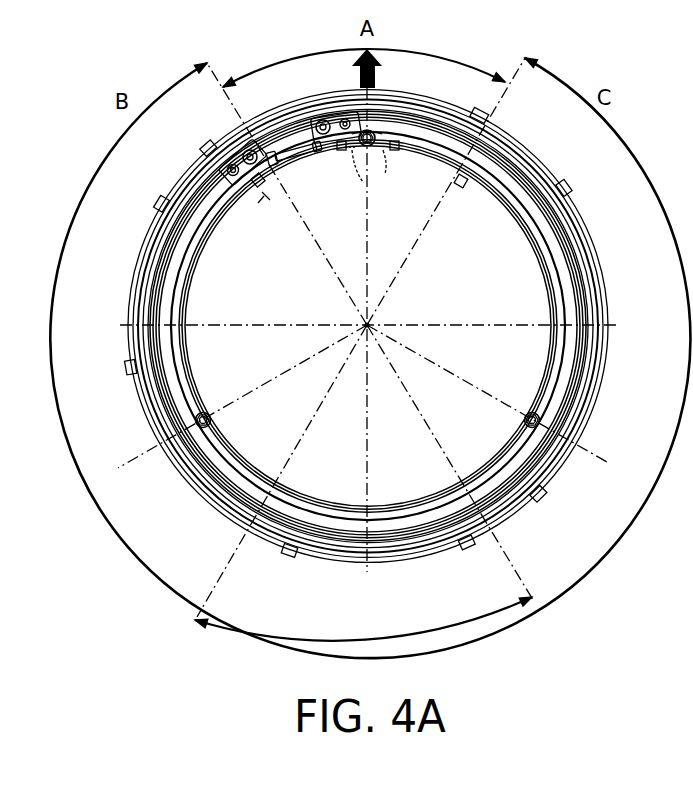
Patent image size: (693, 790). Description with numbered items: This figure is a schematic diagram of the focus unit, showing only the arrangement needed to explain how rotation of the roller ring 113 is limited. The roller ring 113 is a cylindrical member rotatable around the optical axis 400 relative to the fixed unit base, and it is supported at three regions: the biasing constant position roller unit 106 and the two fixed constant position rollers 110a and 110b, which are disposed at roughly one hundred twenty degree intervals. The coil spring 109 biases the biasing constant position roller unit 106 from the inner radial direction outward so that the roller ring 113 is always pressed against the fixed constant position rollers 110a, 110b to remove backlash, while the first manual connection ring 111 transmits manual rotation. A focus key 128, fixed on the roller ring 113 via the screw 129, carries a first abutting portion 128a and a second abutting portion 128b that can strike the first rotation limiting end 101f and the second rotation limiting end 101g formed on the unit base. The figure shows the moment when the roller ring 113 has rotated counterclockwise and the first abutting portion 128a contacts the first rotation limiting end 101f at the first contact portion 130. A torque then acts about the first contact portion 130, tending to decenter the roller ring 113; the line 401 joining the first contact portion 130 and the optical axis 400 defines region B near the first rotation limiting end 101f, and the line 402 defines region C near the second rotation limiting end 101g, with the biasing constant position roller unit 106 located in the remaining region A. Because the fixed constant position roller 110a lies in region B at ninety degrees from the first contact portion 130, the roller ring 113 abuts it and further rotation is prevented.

The biasing constant position roller unit 106 is at (363, 129).
The coil spring 109 is at (374, 160).
The fixed constant position roller 110a is at (199, 432).
The fixed constant position roller 110b is at (541, 422).
The first manual connection ring 111 is at (184, 183).
The roller ring 113 is at (156, 220).
The focus key 128 is at (290, 128).
The first abutting portion 128a is at (288, 162).
The second abutting portion 128b is at (341, 152).
The screw 129 is at (237, 138).
The first contact portion 130 is at (306, 200).
The first rotation limiting end 101f is at (250, 184).
The second rotation limiting end 101g is at (462, 186).
The optical axis 400 is at (362, 322).
The line 401 is at (295, 226).
The line 402 is at (423, 232).